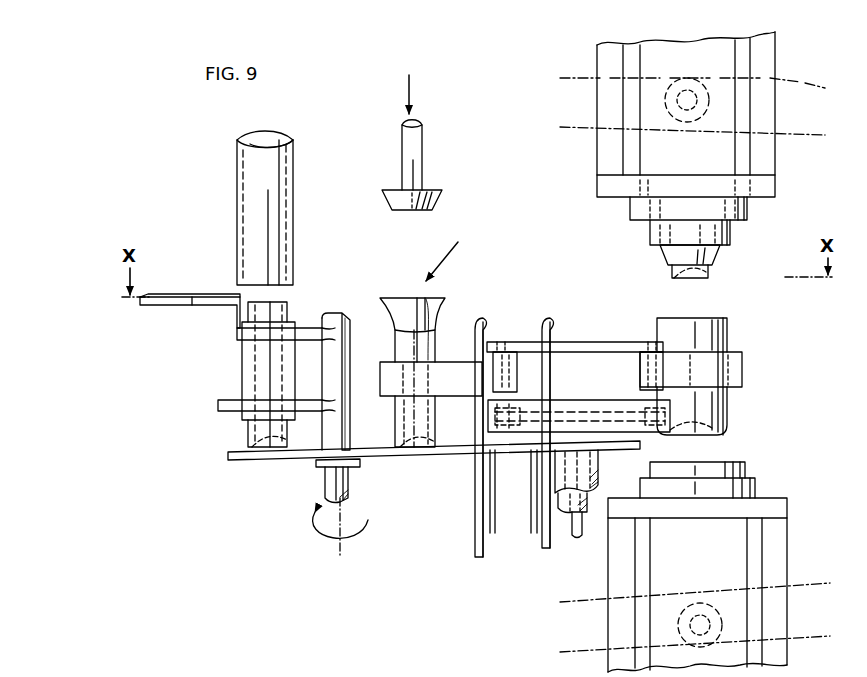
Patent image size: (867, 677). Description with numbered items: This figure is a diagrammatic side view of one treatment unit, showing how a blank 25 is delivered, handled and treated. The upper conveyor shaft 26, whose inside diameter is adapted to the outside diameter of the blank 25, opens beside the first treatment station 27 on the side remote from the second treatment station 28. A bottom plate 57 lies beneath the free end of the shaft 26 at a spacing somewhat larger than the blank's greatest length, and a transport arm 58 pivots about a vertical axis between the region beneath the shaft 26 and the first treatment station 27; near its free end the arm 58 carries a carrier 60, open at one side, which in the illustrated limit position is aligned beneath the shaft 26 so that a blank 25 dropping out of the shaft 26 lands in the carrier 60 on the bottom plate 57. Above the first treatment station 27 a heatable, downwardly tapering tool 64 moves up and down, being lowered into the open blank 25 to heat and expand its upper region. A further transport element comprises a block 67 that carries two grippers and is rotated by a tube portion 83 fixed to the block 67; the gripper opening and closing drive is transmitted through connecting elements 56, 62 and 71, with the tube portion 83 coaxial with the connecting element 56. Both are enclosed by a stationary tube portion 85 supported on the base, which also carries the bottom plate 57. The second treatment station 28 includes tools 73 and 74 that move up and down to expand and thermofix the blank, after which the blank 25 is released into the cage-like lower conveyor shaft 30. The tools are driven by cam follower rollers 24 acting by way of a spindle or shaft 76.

The cam follower roller 24 is at (698, 82).
The blank 25 is at (432, 318).
The upper conveyor shaft 26 is at (237, 212).
The first treatment station 27 is at (462, 254).
The second treatment station 28 is at (738, 340).
The lower conveyor shaft 30 is at (475, 506).
The connecting element 56 is at (577, 538).
The bottom plate 57 is at (247, 461).
The transport arm 58 is at (307, 328).
The carrier 60 is at (245, 374).
The connecting element 62 is at (604, 414).
The tool 64 is at (432, 198).
The block 67 is at (574, 348).
The connecting element 71 is at (670, 410).
The tool 73 is at (722, 272).
The tool 74 is at (766, 466).
The spindle or shaft 76 is at (685, 92).
The tube portion 83 is at (565, 514).
The stationary tube portion 85 is at (598, 468).